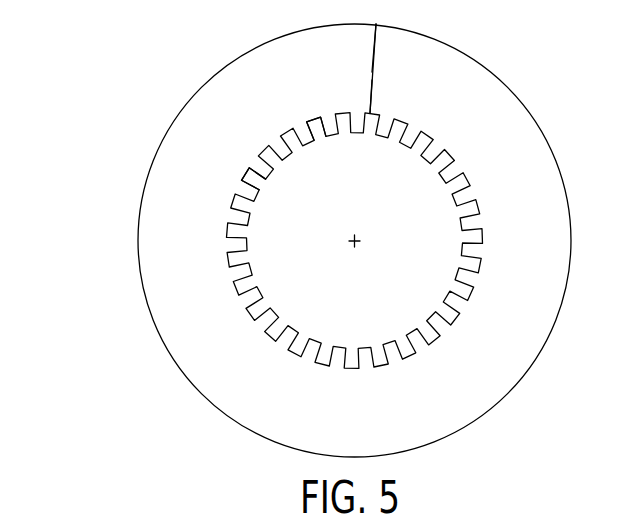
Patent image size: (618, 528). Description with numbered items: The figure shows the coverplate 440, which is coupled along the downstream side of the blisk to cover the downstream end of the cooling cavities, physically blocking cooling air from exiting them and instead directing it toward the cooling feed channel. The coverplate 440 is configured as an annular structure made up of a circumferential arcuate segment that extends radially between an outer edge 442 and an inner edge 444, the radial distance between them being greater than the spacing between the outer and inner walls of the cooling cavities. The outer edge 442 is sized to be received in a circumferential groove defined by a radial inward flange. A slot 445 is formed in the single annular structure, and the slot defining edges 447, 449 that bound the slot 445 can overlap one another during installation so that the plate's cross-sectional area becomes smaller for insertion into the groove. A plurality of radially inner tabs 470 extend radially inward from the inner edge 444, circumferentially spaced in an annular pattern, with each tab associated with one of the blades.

The coverplate 440 is at (97, 253).
The outer edge 442 is at (527, 375).
The inner edge 444 is at (472, 198).
The slot 445 is at (375, 72).
The slot defining edge 447 is at (370, 86).
The slot defining edge 449 is at (375, 105).
The radially inner tabs 470 is at (270, 174).